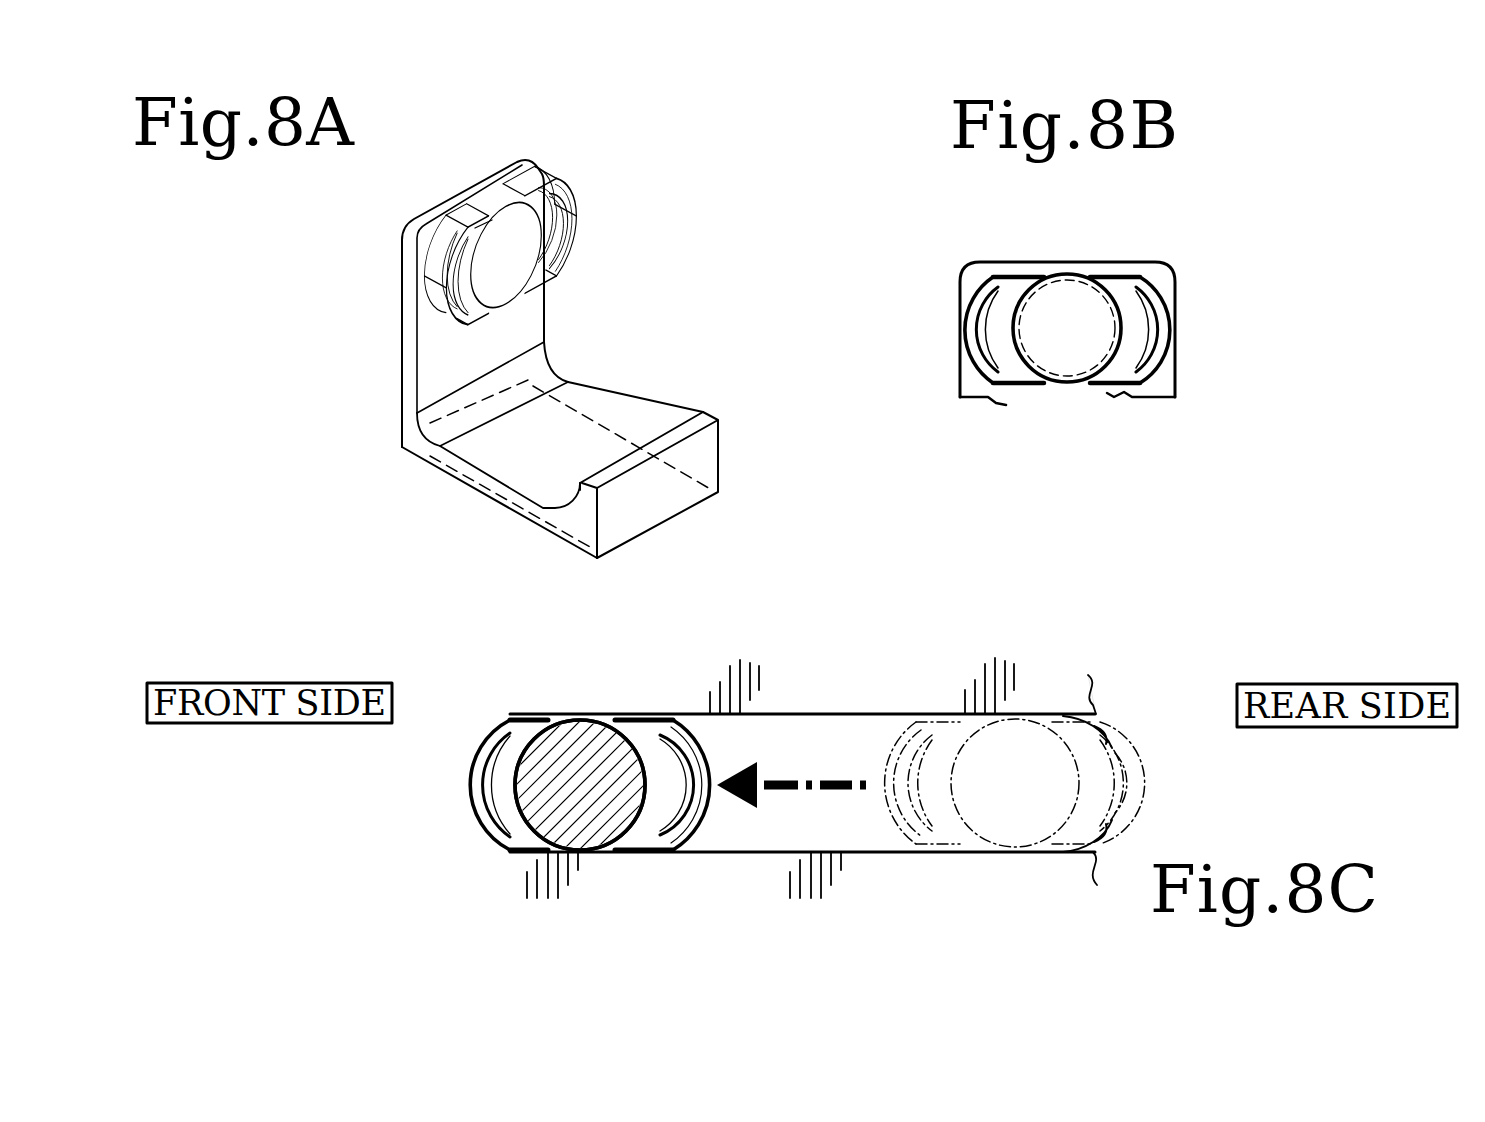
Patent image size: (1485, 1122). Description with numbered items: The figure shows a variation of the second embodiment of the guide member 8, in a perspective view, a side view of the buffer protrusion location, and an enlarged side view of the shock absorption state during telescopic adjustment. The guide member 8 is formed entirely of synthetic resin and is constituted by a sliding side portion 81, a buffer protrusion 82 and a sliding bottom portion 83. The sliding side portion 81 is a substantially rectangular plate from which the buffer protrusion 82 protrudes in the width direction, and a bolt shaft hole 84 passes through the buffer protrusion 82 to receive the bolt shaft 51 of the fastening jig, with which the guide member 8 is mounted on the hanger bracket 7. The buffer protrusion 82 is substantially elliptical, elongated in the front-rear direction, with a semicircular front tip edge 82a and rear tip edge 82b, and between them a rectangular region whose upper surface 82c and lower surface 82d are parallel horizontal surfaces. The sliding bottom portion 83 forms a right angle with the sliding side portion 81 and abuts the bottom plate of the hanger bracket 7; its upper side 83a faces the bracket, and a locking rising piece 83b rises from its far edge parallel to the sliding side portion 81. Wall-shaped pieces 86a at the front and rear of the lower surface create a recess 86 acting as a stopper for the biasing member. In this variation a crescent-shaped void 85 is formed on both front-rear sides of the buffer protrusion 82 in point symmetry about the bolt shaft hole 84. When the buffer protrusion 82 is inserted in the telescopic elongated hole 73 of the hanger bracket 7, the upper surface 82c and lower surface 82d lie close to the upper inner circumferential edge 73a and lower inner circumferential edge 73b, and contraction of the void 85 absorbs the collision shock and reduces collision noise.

In FIG. 8C, the hanger bracket 7 is at (1093, 690).
In FIG. 8A, the guide member 8 is at (612, 393).
In FIG. 8C, the guide member 8 is at (718, 750).
In FIG. 8C, the bolt shaft 51 is at (590, 770).
In FIG. 8C, the telescopic elongated hole 73 is at (872, 715).
In FIG. 8C, the upper inner circumferential edge 73a is at (1100, 733).
In FIG. 8C, the lower inner circumferential edge 73b is at (1100, 823).
In FIG. 8A, the sliding side portion 81 is at (403, 277).
In FIG. 8B, the sliding side portion 81 is at (958, 290).
In FIG. 8A, the buffer protrusion 82 is at (562, 272).
In FIG. 8B, the buffer protrusion 82 is at (1122, 283).
In FIG. 8C, the buffer protrusion 82 is at (525, 737).
In FIG. 8A, the front tip edge 82a is at (446, 276).
In FIG. 8B, the front tip edge 82a is at (970, 363).
In FIG. 8C, the front tip edge 82a is at (487, 813).
In FIG. 8A, the rear tip edge 82b is at (556, 215).
In FIG. 8B, the rear tip edge 82b is at (1167, 360).
In FIG. 8C, the rear tip edge 82b is at (708, 772).
In FIG. 8A, the upper surface 82c is at (462, 238).
In FIG. 8B, the upper surface 82c is at (1013, 277).
In FIG. 8C, the upper surface 82c is at (643, 718).
In FIG. 8A, the lower surface 82d is at (532, 290).
In FIG. 8B, the lower surface 82d is at (1127, 385).
In FIG. 8C, the lower surface 82d is at (640, 848).
In FIG. 8A, the sliding bottom portion 83 is at (577, 388).
In FIG. 8A, the base upper surface 83a is at (523, 452).
In FIG. 8A, the locking rising piece 83b is at (717, 437).
In FIG. 8A, the bolt shaft hole 84 is at (483, 223).
In FIG. 8B, the bolt shaft hole 84 is at (1074, 359).
In FIG. 8A, the void 85 is at (566, 246).
In FIG. 8B, the void 85 is at (977, 328).
In FIG. 8C, the void 85 is at (487, 790).
In FIG. 8A, the recess 86 is at (660, 513).
In FIG. 8A, the wall-shaped pieces 86a is at (713, 493).
In FIG. 8C, the wall-shaped pieces 86a is at (980, 636).